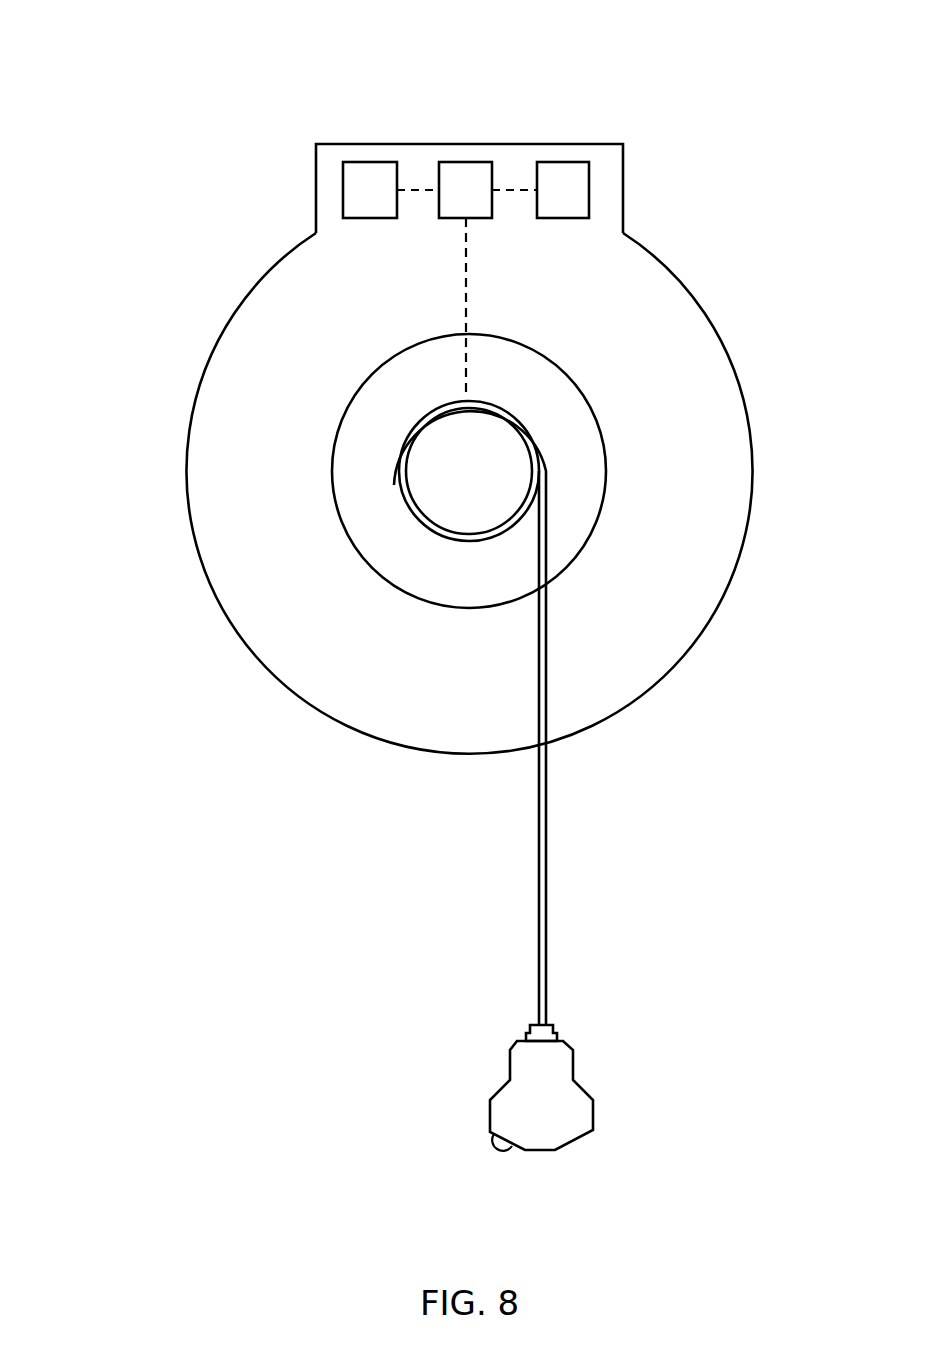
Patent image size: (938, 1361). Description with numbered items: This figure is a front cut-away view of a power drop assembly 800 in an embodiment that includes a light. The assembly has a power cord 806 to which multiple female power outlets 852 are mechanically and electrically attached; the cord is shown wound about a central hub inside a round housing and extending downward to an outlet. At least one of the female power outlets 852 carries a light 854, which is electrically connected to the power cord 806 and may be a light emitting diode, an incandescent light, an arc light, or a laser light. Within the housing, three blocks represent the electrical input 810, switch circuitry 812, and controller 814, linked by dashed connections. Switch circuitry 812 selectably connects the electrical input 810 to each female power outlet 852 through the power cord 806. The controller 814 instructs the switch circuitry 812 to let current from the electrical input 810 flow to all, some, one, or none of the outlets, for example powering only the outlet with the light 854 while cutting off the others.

The power drop assembly 800 is at (145, 66).
The power cord 806 is at (546, 929).
The electrical input 810 is at (568, 218).
The switch circuitry 812 is at (438, 208).
The controller 814 is at (343, 201).
The female power outlet 852 is at (517, 1150).
The light 854 is at (497, 1157).